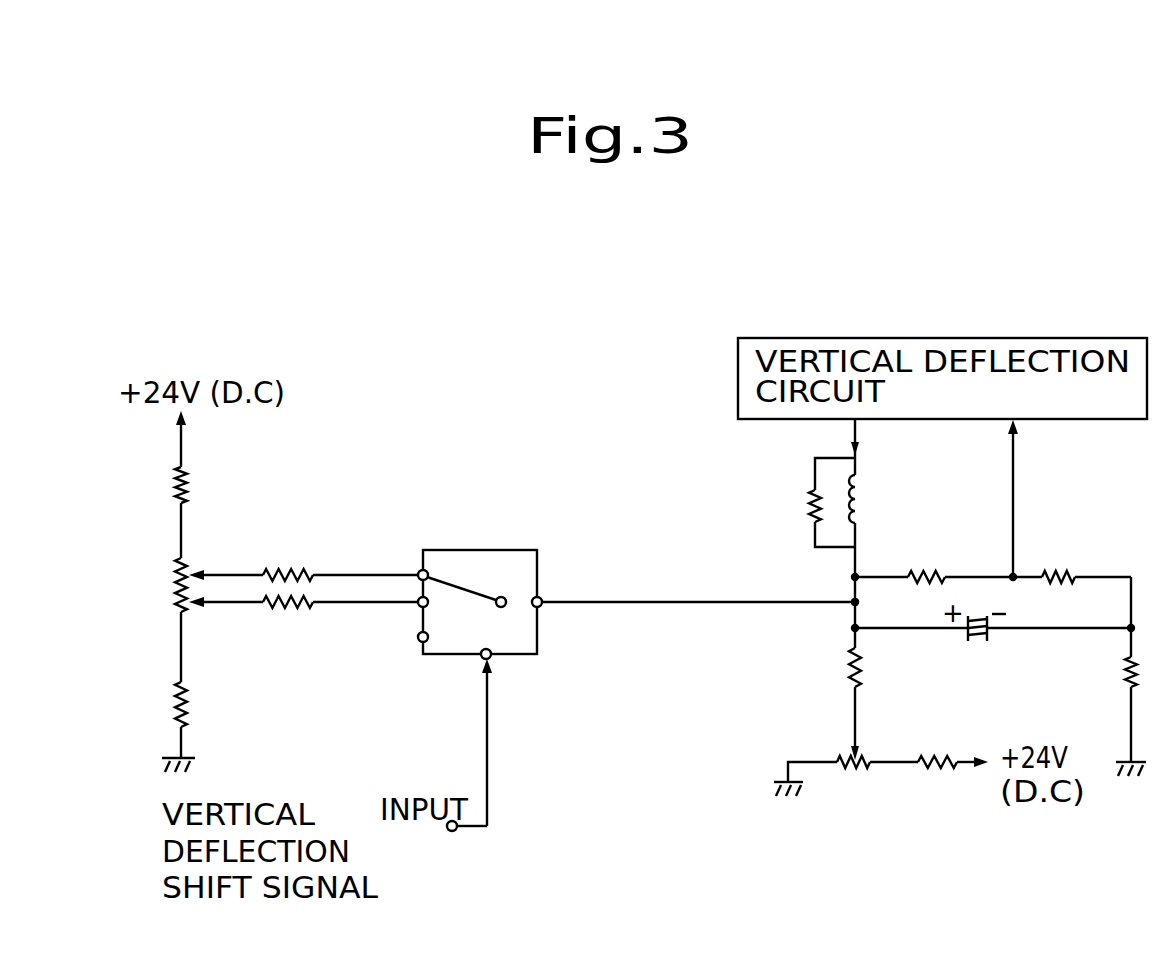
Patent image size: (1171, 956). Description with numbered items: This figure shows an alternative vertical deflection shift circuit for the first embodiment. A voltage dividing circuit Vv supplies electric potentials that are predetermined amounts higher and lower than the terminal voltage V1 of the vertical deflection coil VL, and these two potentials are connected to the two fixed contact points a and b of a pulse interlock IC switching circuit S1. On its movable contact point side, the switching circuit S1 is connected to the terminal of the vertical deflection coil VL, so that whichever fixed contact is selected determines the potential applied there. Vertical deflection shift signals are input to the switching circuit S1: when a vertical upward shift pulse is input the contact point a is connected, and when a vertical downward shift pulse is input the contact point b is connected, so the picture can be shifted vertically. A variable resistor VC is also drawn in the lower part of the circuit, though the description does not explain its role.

The voltage dividing circuit Vv is at (205, 487).
The pulse interlock IC switching circuit S1 is at (488, 550).
The fixed contact point a is at (420, 572).
The fixed contact point b is at (420, 636).
The vertical deflection coil VL is at (866, 490).
The terminal voltage V1 is at (851, 606).
The centering variable resistor VC is at (861, 768).